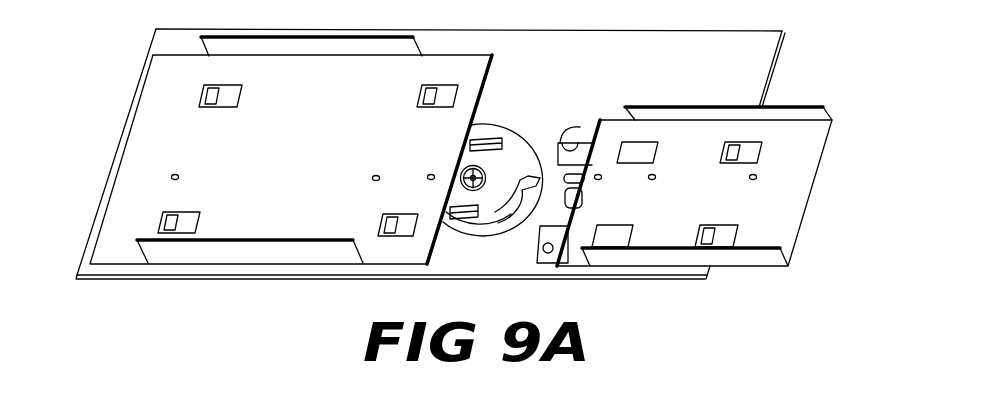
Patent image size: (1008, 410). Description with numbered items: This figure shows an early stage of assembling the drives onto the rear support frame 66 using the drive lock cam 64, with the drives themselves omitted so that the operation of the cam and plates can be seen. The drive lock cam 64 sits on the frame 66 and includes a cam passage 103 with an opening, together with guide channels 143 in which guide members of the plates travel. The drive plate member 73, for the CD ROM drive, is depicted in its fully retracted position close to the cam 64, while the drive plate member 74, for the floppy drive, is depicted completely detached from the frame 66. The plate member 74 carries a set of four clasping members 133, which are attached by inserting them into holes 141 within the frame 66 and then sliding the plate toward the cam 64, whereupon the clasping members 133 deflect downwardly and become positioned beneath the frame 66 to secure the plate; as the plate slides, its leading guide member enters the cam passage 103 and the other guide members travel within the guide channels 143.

The rear support frame 66 is at (767, 52).
The drive plate member 73 is at (128, 187).
The drive plate member 74 is at (803, 187).
The drive lock cam 64 is at (497, 128).
The cam passage 103 is at (503, 203).
The holes 141 is at (565, 143).
The clasping members 133 is at (737, 145).
The guide channels 143 is at (573, 201).